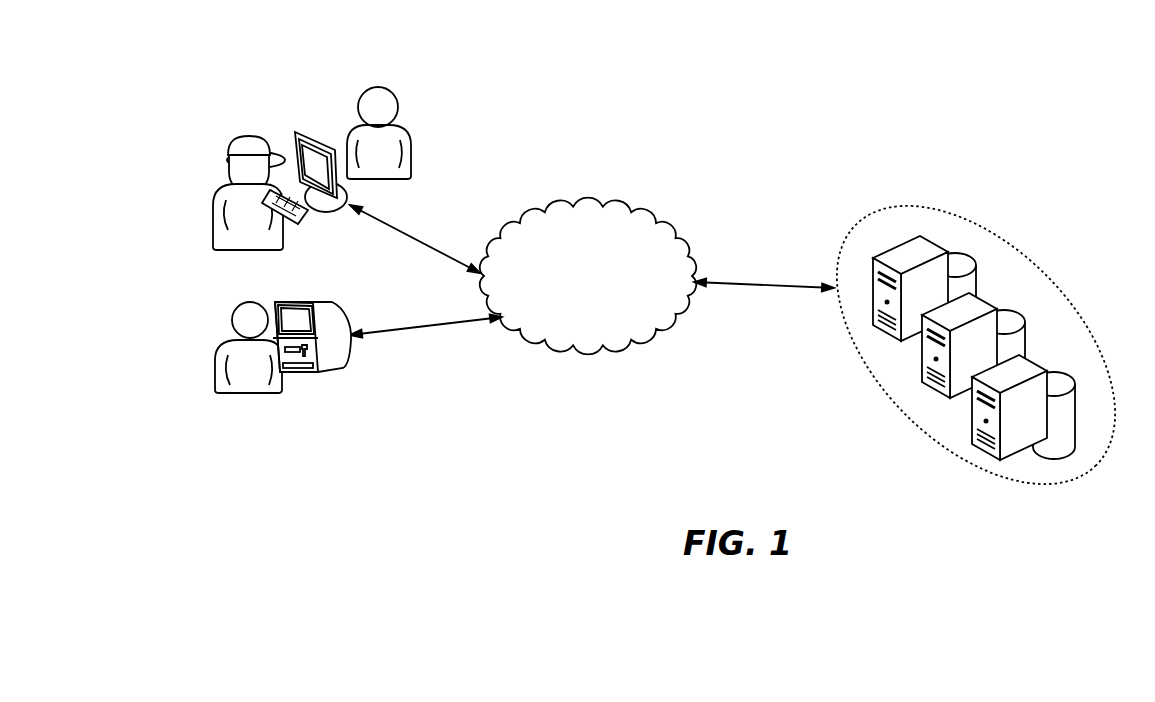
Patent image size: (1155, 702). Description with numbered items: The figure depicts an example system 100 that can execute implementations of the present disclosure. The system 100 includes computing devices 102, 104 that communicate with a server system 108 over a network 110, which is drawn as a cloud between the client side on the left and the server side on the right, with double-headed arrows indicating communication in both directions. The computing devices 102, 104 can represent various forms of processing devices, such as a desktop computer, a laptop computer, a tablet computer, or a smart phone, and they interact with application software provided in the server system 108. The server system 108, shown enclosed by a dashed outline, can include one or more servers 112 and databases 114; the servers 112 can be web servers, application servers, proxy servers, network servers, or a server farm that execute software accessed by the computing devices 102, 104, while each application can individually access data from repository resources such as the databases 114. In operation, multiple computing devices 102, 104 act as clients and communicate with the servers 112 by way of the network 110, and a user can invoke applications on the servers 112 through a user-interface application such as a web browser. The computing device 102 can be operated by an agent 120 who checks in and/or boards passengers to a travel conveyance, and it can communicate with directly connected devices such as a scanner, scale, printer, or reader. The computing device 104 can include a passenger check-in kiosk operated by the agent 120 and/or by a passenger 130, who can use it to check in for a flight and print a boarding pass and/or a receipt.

The system 100 is at (834, 112).
The computing device 102 is at (330, 212).
The computing device 104 is at (347, 366).
The server system 108 is at (1037, 260).
The network 110 is at (592, 205).
The servers 112 is at (902, 246).
The databases 114 is at (953, 253).
The agent 120 is at (228, 168).
The passenger 130 is at (228, 320).